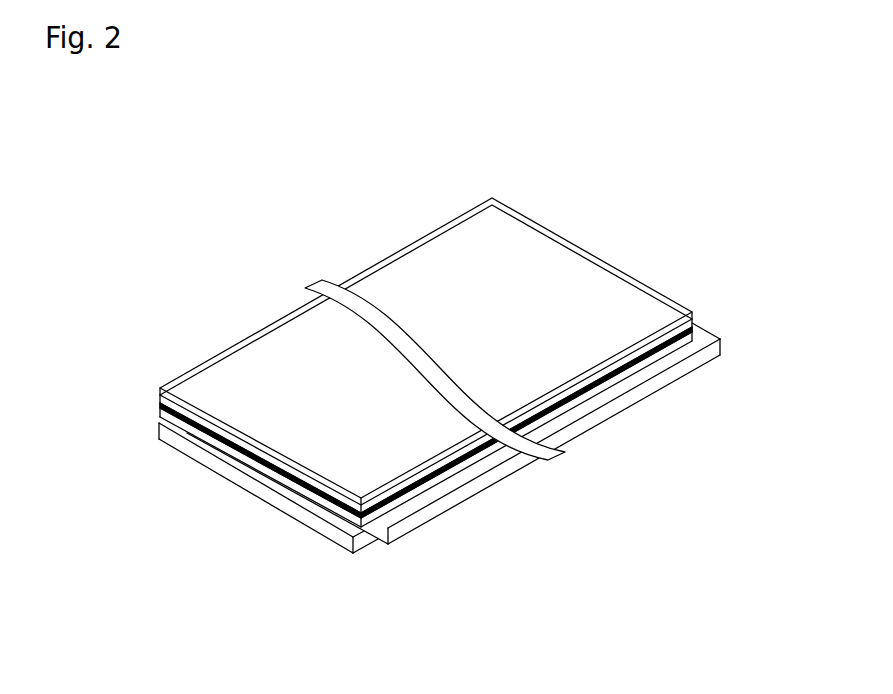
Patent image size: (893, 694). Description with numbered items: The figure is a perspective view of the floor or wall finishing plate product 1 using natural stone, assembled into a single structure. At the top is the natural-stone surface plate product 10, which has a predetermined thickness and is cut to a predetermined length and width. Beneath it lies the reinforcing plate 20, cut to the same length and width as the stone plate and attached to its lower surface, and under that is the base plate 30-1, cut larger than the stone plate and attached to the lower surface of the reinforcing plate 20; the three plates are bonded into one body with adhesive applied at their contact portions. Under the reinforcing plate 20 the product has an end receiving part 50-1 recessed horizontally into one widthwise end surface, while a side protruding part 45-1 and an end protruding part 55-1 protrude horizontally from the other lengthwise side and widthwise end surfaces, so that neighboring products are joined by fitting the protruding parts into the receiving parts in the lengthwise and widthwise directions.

The floor or wall finishing plate product 1 is at (416, 346).
The natural-stone surface plate product 10 is at (270, 323).
The reinforcing plate 20 is at (147, 404).
The base plate 30-1 is at (255, 507).
The side protruding part 45-1 is at (653, 368).
The end receiving part 50-1 is at (230, 461).
The end protruding part 55-1 is at (702, 319).